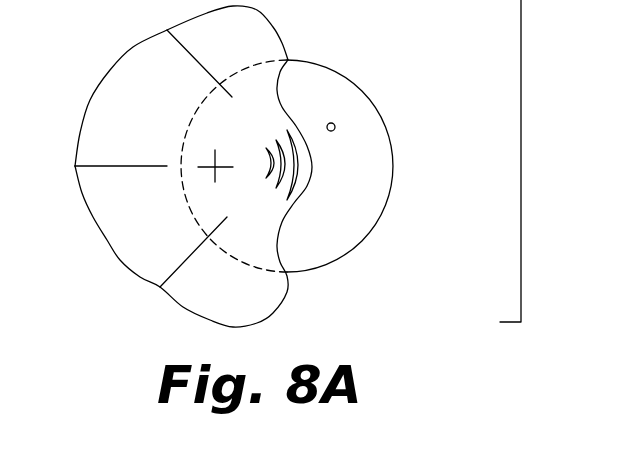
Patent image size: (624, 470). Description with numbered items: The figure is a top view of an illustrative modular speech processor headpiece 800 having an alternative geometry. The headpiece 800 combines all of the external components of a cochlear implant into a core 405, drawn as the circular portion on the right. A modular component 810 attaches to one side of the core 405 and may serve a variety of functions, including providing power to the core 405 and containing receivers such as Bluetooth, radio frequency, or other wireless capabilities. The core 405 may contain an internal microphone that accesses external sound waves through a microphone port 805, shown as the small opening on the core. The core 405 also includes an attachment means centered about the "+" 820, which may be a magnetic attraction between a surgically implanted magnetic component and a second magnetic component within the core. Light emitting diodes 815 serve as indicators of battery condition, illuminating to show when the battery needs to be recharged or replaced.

The modular speech processor headpiece 800 is at (521, 149).
The modular component 810 is at (150, 80).
The "+" marking 820 is at (214, 170).
The core 405 is at (303, 73).
The microphone port 805 is at (334, 124).
The light emitting diodes 815 is at (292, 197).